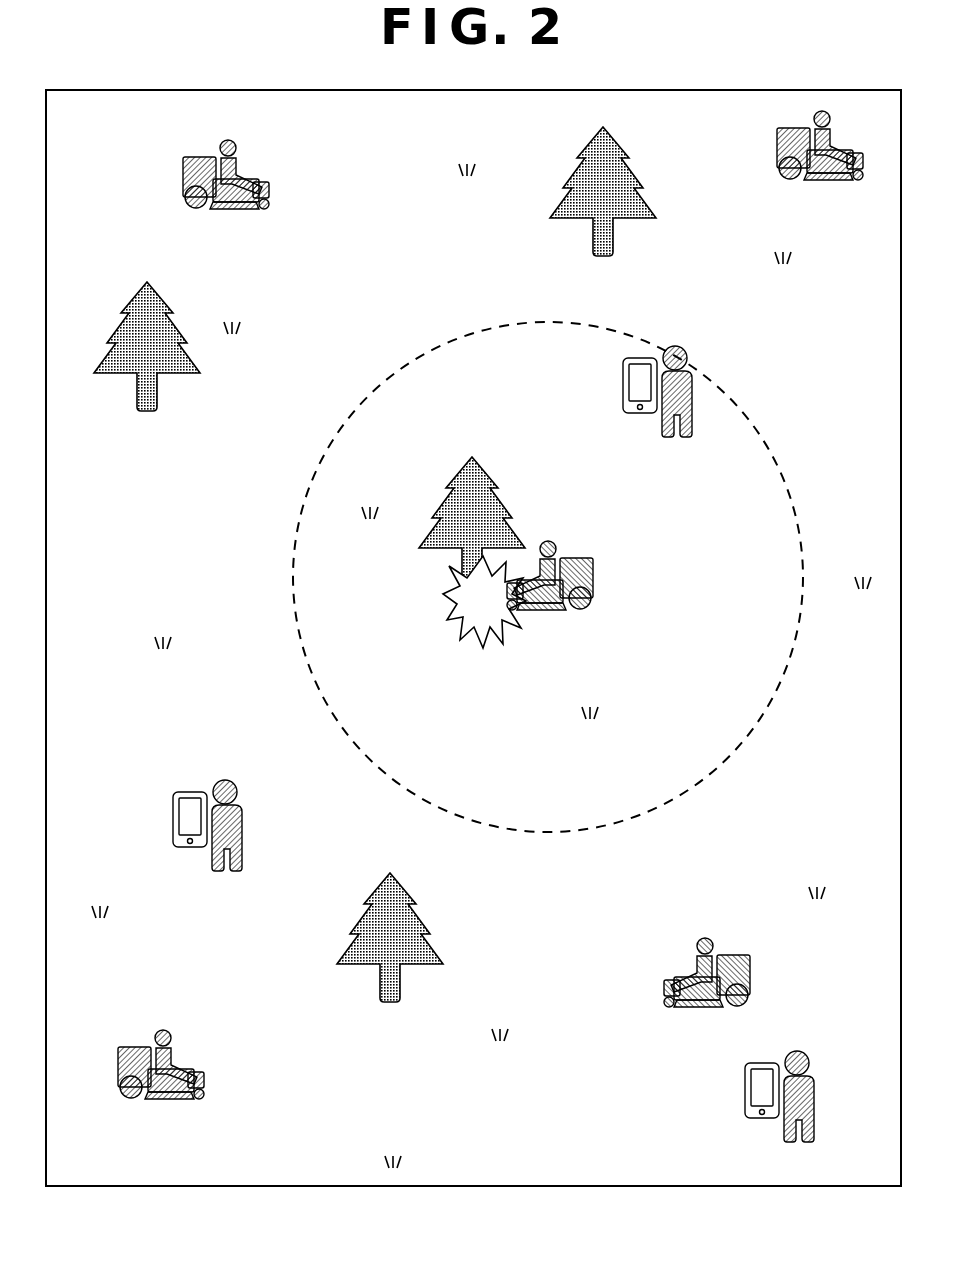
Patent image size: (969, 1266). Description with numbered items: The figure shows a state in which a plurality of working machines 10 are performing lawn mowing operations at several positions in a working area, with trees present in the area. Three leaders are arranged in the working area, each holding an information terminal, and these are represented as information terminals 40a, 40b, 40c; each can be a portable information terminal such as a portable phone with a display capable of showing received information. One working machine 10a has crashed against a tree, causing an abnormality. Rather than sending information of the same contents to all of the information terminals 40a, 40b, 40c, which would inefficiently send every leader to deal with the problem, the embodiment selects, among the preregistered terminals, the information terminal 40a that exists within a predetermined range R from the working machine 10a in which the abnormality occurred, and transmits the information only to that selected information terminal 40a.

The working machine 10 is at (270, 195).
The working machine 10a is at (598, 577).
The information terminal 40a is at (622, 387).
The information terminal 40b is at (172, 819).
The information terminal 40c is at (744, 1093).
The predetermined range R is at (292, 571).